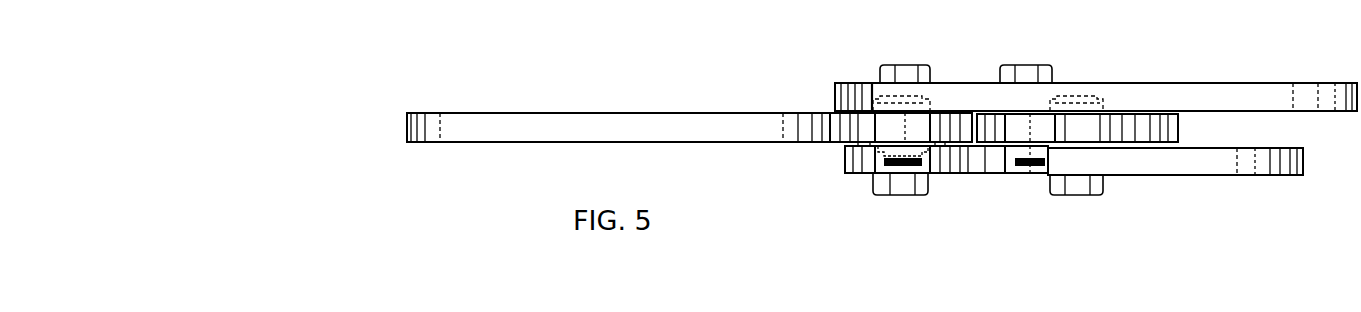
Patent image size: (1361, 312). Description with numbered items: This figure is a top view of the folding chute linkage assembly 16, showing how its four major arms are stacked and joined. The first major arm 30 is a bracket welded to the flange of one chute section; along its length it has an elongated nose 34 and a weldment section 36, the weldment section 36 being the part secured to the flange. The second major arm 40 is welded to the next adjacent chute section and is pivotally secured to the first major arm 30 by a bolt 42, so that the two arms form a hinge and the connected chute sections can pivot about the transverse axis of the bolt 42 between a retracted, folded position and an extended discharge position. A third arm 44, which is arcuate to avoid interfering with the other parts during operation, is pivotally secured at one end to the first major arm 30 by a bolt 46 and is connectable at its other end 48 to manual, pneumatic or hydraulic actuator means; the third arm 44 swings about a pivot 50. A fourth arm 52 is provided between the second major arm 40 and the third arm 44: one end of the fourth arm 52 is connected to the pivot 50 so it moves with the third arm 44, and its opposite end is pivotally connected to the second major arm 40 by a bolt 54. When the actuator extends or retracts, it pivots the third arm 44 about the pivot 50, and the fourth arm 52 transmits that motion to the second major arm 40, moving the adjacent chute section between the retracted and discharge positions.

The folding chute linkage assembly 16 is at (792, 72).
The first major arm 30 is at (640, 138).
The elongated nose 34 is at (426, 113).
The weldment section 36 is at (512, 136).
The second major arm 40 is at (1198, 89).
The bolt 42 is at (922, 65).
The third arm 44 is at (855, 159).
The bolt 46 is at (903, 186).
The other end of third arm 48 is at (1248, 166).
The pivot 50 is at (1075, 187).
The fourth arm 52 is at (1180, 136).
The bolt 54 is at (1043, 65).